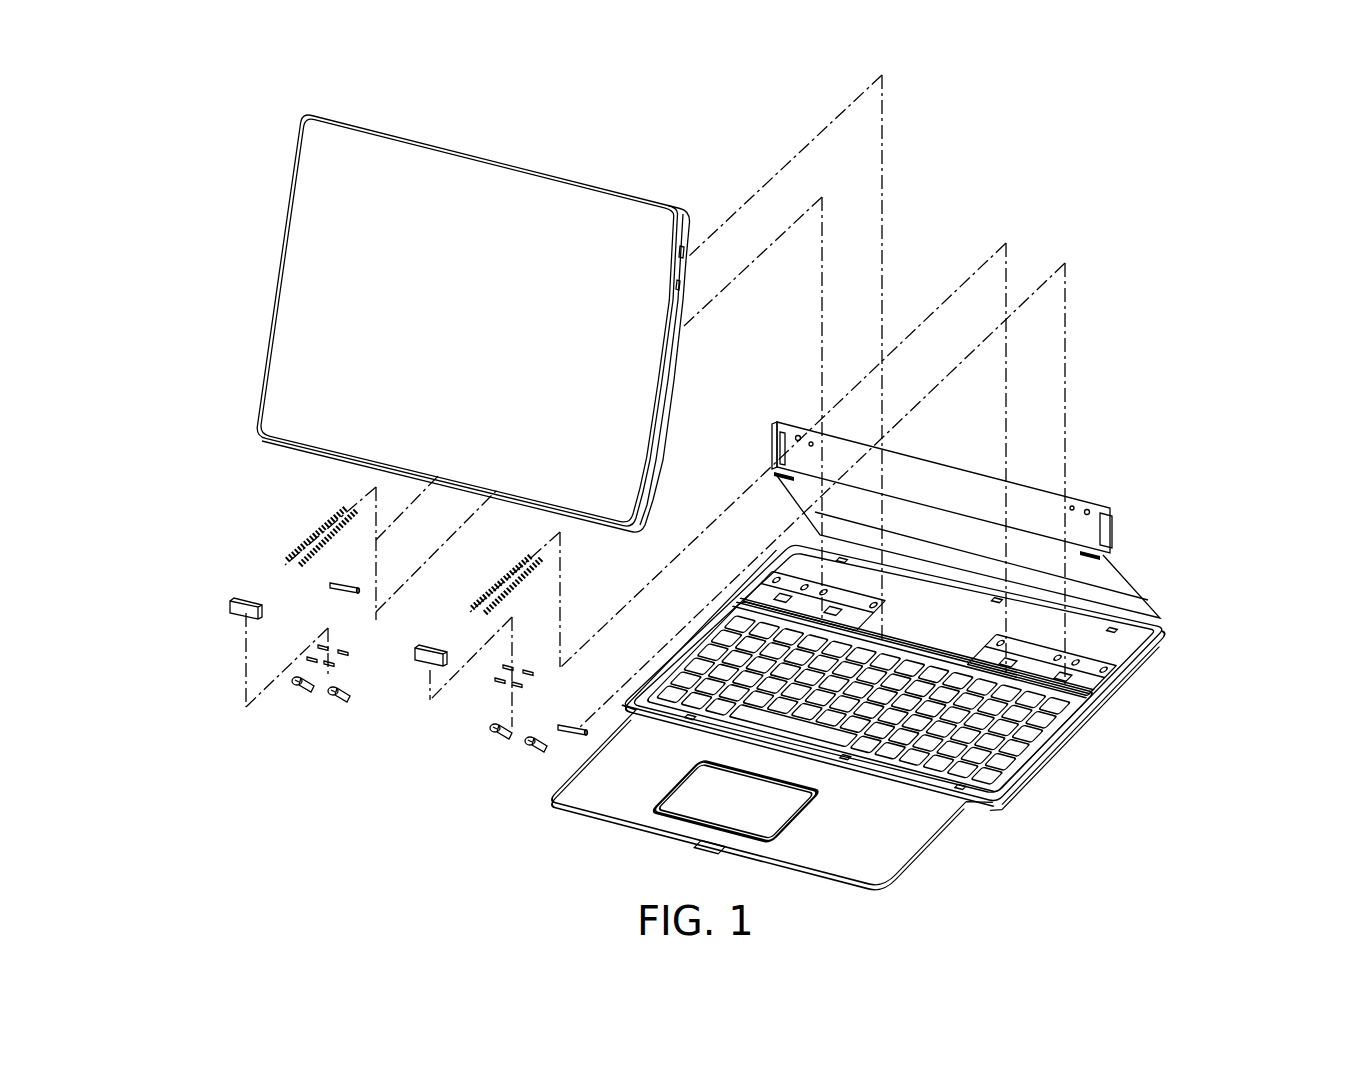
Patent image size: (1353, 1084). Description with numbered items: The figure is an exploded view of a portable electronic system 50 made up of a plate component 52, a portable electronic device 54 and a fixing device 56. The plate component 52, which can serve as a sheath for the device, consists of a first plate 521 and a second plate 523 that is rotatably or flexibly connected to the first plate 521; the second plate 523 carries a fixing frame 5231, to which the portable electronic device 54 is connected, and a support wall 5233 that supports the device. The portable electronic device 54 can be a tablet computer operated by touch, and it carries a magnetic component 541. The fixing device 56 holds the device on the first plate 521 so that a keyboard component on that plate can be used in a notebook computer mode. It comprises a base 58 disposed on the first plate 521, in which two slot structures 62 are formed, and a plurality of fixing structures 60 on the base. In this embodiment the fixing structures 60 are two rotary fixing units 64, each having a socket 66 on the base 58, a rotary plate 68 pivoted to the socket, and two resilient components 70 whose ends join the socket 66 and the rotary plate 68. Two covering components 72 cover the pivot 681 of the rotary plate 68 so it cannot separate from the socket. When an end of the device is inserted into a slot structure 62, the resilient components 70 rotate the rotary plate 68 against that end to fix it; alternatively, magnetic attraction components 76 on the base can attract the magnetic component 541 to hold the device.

The portable electronic system 50 is at (1136, 285).
The plate component 52 is at (1265, 458).
The first plate 521 is at (1155, 655).
The second plate 523 is at (1206, 440).
The fixing frame 5231 is at (1102, 503).
The support wall 5233 is at (1112, 572).
The portable electronic device 54 is at (568, 193).
The magnetic component 541 is at (330, 590).
The fixing device 56 is at (675, 717).
The base 58 is at (1123, 651).
The fixing structures 60 is at (173, 772).
The slot structure 62 is at (735, 600).
The rotary fixing unit 64 is at (333, 742).
The socket 66 is at (1027, 645).
The rotary plate 68 is at (243, 610).
The pivot 681 is at (232, 607).
The resilient component 70 is at (282, 560).
The covering component 72 is at (307, 690).
The magnetic attraction component 76 is at (352, 658).